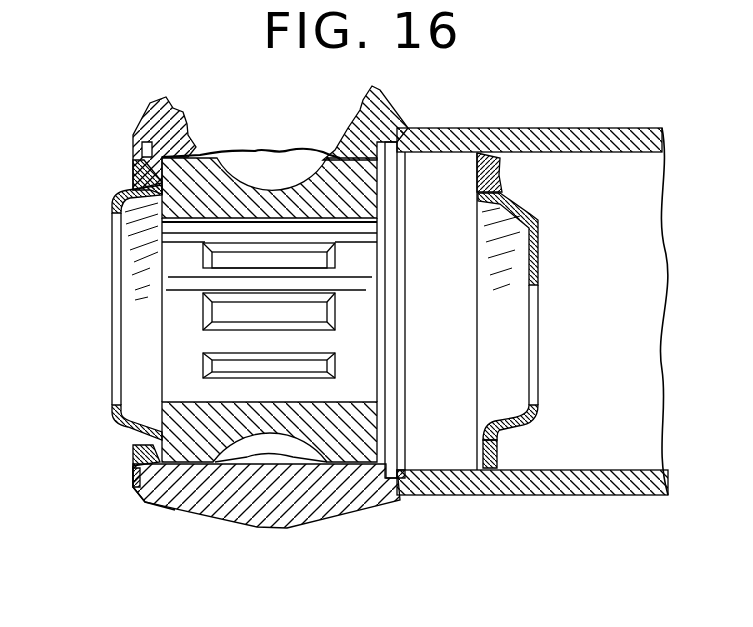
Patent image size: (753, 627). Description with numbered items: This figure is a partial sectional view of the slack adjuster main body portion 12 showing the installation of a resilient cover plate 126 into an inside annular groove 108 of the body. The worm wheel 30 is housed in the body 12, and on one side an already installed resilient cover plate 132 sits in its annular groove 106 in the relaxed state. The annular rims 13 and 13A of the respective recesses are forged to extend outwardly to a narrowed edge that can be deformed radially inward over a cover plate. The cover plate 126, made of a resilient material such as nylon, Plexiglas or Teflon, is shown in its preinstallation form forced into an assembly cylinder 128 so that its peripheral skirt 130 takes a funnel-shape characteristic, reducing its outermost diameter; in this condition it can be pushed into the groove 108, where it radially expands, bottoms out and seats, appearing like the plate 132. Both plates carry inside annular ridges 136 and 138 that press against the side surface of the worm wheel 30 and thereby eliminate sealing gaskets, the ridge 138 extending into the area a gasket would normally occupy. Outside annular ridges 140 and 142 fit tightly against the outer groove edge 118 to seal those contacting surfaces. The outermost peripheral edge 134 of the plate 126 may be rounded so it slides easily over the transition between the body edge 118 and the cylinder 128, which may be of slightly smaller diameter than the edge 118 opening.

The annular rim 13A is at (133, 135).
The worm wheel 30 is at (198, 185).
The annular rim 13 is at (405, 128).
The annular groove 108 is at (388, 490).
The assembly cylinder 128 is at (635, 130).
The outside annular ridge 140 is at (500, 167).
The inside annular ridge 136 is at (478, 187).
The resilient cover plate 126 is at (555, 337).
The peripheral skirt 130 is at (470, 424).
The outermost peripheral edge 134 is at (477, 468).
The resilient cover plate 132 is at (96, 329).
The inside annular ridge 138 is at (162, 440).
The outside annular ridge 142 is at (133, 460).
The outer groove edge 118 is at (140, 474).
The main body portion 12 is at (302, 508).
The annular groove 106 is at (148, 483).